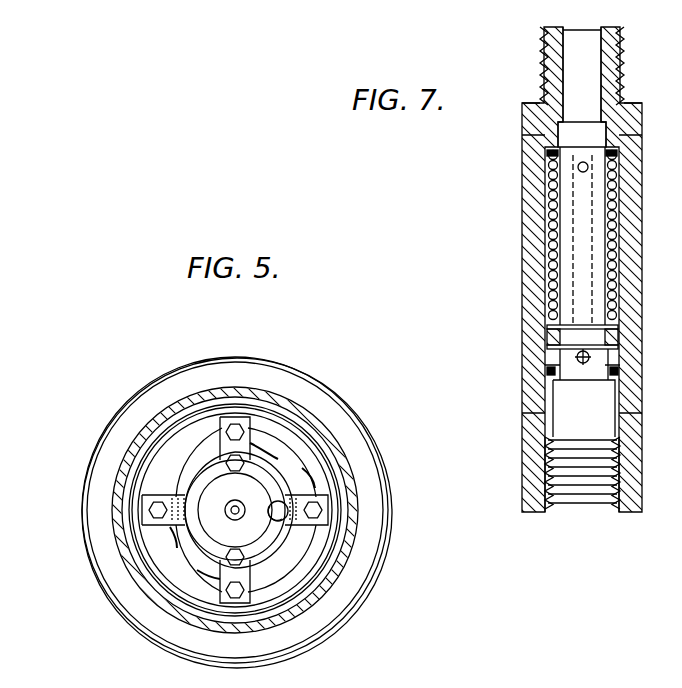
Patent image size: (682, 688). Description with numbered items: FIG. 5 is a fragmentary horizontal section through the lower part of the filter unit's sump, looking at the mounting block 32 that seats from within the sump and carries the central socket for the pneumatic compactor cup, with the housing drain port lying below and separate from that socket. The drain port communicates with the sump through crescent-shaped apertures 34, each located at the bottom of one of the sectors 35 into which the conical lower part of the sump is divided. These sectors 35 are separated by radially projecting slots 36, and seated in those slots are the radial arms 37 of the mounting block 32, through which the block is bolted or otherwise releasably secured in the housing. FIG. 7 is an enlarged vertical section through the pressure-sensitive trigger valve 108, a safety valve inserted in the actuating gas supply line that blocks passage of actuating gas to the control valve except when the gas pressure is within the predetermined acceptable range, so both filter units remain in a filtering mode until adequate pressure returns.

In FIG. 5, the mounting block 32 is at (333, 512).
In FIG. 5, the crescent-shaped apertures 34 is at (195, 486).
In FIG. 5, the sectors 35 is at (246, 510).
In FIG. 5, the radially projecting slots 36 is at (240, 511).
In FIG. 5, the radial arms 37 is at (234, 418).
In FIG. 7, the trigger valve 108 is at (522, 281).